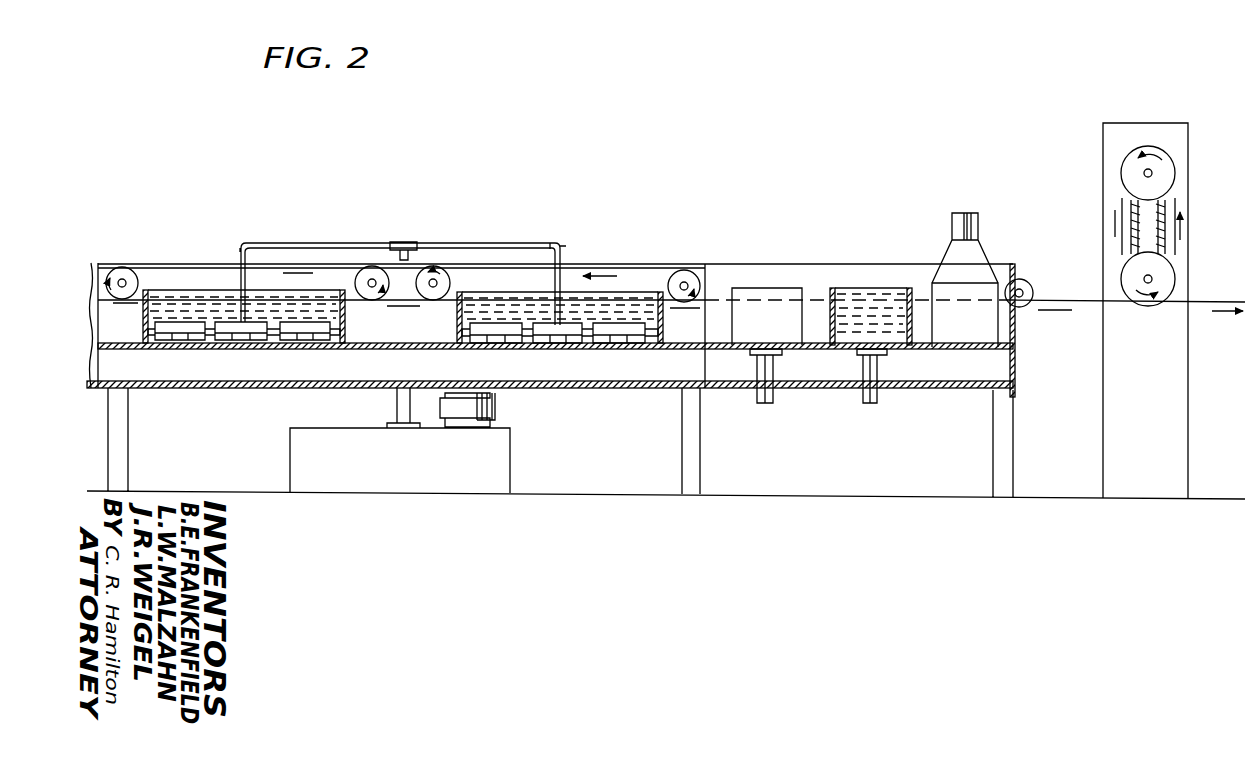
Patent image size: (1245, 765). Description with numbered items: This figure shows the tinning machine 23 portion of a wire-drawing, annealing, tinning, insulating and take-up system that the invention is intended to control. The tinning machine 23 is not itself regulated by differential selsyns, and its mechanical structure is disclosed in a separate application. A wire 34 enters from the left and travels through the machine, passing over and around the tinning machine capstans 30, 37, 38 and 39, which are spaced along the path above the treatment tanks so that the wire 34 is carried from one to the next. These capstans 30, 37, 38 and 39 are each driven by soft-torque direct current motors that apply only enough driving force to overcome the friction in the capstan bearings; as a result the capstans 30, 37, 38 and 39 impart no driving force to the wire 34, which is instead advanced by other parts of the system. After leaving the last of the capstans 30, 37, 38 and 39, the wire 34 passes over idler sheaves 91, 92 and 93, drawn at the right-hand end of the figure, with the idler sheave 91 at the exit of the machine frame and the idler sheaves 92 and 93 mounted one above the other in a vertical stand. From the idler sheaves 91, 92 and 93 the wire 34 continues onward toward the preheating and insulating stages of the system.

The tinning machine 23 is at (478, 232).
The capstan 30 is at (126, 268).
The wire 34 is at (450, 300).
The capstan 37 is at (372, 266).
The capstan 38 is at (440, 268).
The capstan 39 is at (689, 271).
The idler sheave 91 is at (1032, 285).
The idler sheave 92 is at (1170, 277).
The idler sheave 93 is at (1162, 177).